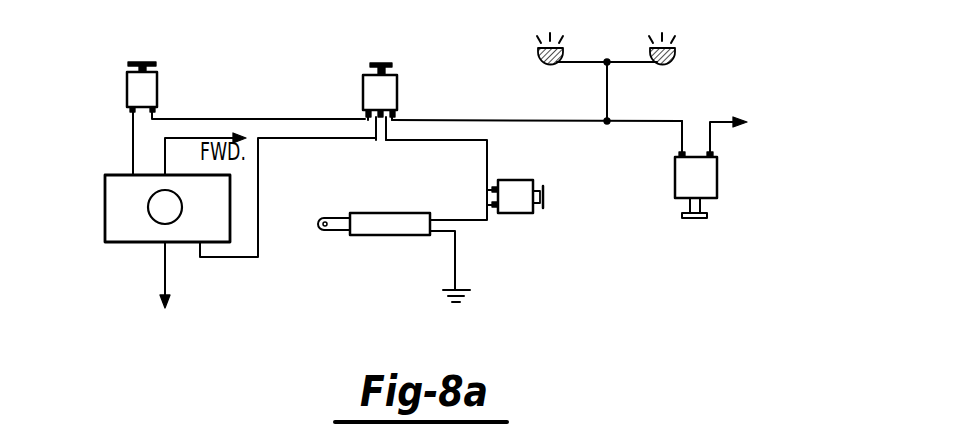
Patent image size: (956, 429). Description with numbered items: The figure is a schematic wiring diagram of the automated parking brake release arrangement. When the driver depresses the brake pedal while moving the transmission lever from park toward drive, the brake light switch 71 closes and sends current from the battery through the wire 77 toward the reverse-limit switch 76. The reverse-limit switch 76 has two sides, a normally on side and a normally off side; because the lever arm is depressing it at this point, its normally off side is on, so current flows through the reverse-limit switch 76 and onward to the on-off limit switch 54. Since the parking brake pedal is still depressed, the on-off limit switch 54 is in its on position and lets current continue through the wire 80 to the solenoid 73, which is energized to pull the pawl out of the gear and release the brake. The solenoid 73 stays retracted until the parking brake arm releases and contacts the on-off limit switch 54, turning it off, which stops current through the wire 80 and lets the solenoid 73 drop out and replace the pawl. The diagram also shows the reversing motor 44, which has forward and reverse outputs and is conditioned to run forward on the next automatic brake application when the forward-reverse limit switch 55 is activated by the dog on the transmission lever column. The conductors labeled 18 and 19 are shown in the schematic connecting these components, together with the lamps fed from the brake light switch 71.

The motor 44 is at (192, 244).
The on-off limit switch 54 is at (520, 213).
The forward-reverse limit switch 55 is at (157, 88).
The brake light switch 71 is at (717, 192).
The solenoid 73 is at (382, 237).
The reverse-limit switch 76 is at (398, 82).
The wire 77 is at (635, 121).
The bus wire 18 is at (452, 120).
The wire / conductor 19 is at (487, 160).
The wire 80 is at (480, 221).